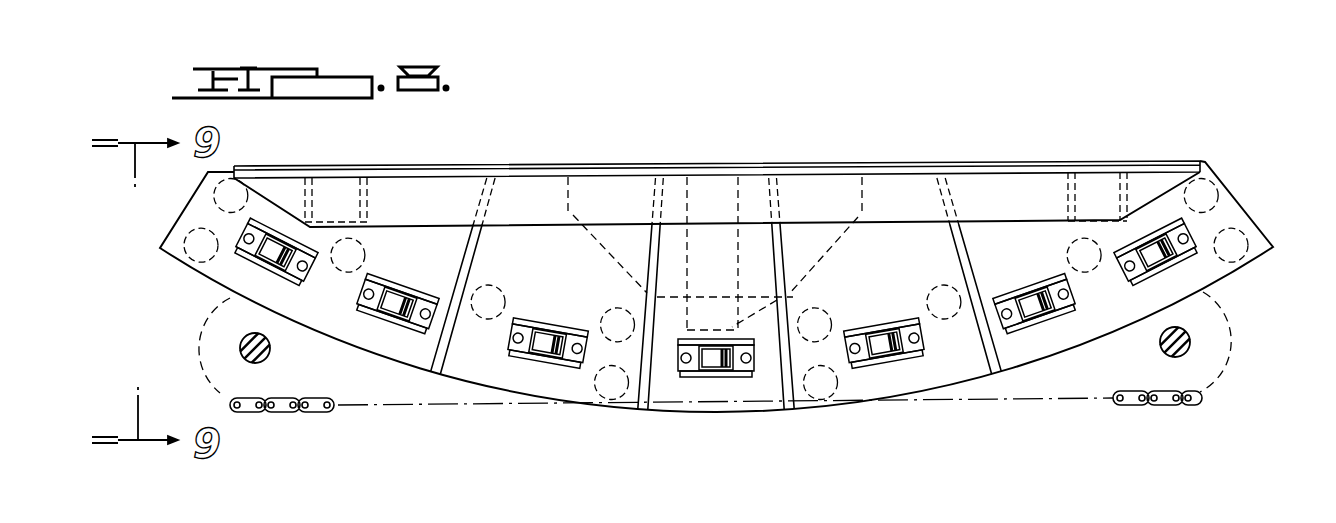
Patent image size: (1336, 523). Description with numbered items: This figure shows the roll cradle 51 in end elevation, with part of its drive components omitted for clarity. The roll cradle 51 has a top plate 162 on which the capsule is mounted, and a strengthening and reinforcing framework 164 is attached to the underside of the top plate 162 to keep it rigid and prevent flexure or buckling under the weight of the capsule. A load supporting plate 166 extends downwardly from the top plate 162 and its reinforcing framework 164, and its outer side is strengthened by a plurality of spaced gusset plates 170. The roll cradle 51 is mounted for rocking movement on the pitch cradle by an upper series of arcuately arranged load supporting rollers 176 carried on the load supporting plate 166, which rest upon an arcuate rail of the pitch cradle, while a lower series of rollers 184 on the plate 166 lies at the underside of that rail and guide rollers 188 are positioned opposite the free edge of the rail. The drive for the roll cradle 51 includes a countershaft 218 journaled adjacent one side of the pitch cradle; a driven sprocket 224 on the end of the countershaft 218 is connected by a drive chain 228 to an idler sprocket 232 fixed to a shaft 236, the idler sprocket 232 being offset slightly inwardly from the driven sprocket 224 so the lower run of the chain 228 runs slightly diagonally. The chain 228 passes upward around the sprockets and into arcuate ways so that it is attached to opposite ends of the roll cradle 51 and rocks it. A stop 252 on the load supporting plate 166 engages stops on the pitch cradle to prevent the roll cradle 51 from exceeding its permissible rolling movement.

The roll cradle 51 is at (697, 149).
The top plate 162 is at (410, 165).
The reinforcing framework 164 is at (902, 186).
The load supporting plate 166 is at (916, 262).
The gusset plate 170 is at (476, 252).
The load supporting roller 176 is at (367, 257).
The lower roller 184 is at (158, 262).
The guide roller 188 is at (512, 338).
The countershaft 218 is at (1188, 333).
The driven sprocket 224 is at (1213, 357).
The drive chain 228 is at (313, 413).
The idler sprocket 232 is at (210, 365).
The shaft 236 is at (240, 344).
The stop 252 is at (715, 253).